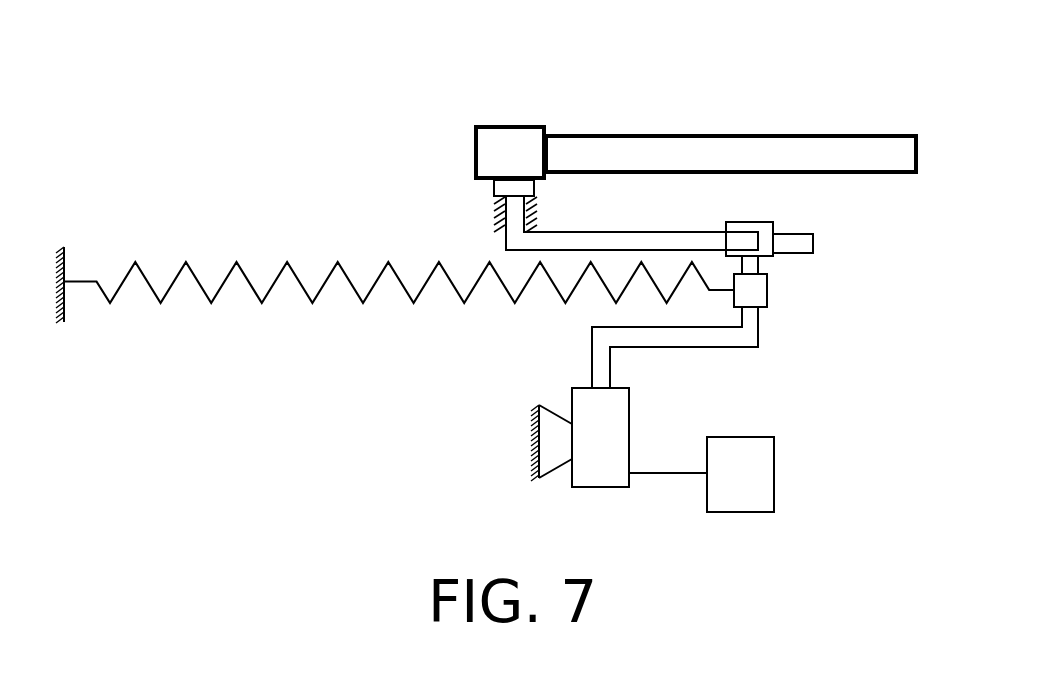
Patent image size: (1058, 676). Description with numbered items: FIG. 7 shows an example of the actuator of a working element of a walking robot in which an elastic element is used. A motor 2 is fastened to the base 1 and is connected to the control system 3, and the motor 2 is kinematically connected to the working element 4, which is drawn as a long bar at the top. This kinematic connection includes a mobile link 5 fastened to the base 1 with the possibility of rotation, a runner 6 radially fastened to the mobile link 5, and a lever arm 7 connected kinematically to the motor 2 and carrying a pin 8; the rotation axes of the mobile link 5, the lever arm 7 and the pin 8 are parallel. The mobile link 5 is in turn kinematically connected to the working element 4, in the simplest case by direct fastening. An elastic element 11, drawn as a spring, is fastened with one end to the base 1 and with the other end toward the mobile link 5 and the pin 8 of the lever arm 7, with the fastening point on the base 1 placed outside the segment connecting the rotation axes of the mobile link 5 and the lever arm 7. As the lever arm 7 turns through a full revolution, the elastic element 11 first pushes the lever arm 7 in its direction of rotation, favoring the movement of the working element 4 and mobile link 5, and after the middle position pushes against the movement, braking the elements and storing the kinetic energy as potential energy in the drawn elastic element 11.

The base 1 is at (495, 213).
The motor 2 is at (610, 432).
The control system 3 is at (744, 485).
The working element 4 is at (741, 135).
The mobile link 5 is at (807, 242).
The runner 6 is at (765, 240).
The lever arm 7 is at (708, 337).
The pin 8 is at (750, 322).
The elastic element 11 is at (275, 283).